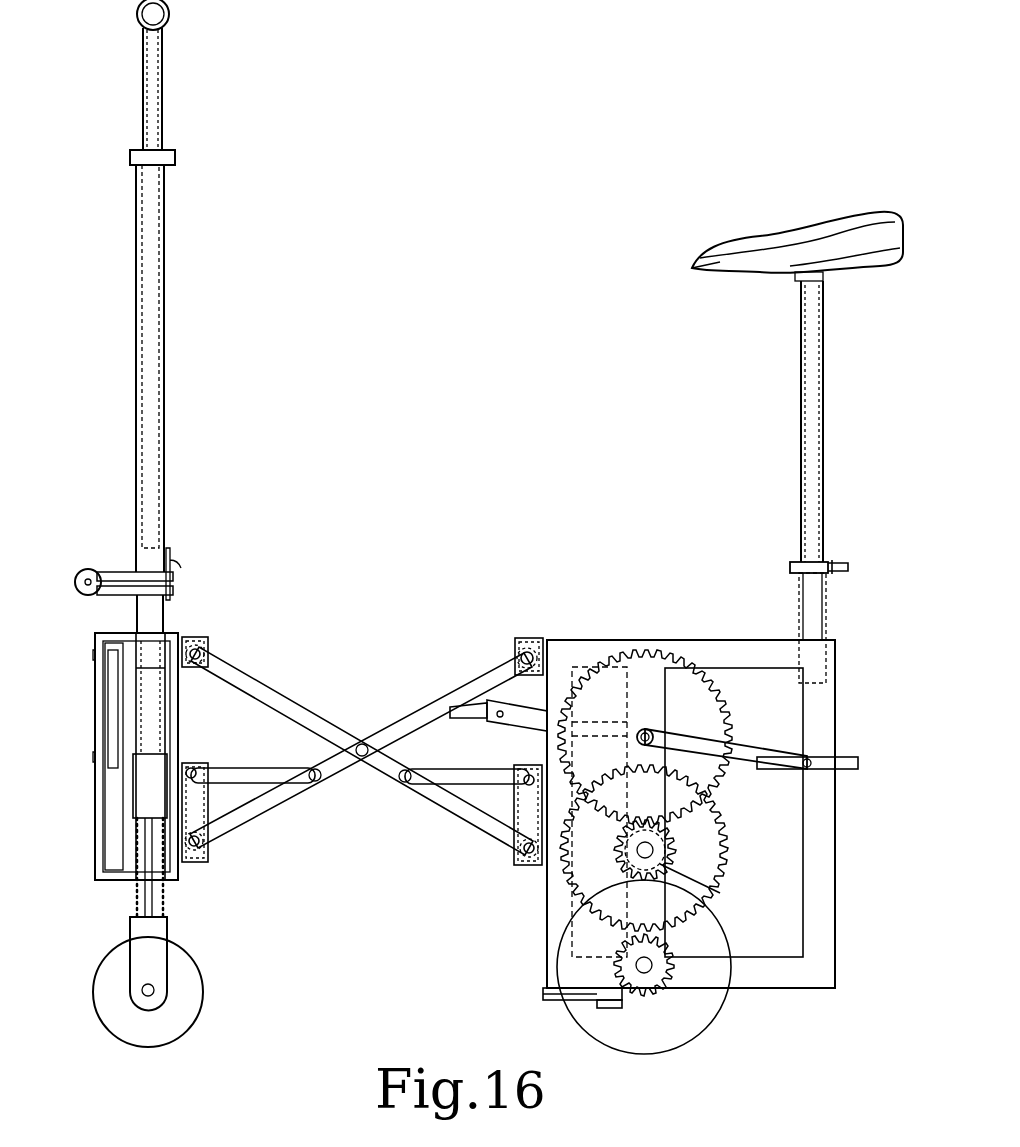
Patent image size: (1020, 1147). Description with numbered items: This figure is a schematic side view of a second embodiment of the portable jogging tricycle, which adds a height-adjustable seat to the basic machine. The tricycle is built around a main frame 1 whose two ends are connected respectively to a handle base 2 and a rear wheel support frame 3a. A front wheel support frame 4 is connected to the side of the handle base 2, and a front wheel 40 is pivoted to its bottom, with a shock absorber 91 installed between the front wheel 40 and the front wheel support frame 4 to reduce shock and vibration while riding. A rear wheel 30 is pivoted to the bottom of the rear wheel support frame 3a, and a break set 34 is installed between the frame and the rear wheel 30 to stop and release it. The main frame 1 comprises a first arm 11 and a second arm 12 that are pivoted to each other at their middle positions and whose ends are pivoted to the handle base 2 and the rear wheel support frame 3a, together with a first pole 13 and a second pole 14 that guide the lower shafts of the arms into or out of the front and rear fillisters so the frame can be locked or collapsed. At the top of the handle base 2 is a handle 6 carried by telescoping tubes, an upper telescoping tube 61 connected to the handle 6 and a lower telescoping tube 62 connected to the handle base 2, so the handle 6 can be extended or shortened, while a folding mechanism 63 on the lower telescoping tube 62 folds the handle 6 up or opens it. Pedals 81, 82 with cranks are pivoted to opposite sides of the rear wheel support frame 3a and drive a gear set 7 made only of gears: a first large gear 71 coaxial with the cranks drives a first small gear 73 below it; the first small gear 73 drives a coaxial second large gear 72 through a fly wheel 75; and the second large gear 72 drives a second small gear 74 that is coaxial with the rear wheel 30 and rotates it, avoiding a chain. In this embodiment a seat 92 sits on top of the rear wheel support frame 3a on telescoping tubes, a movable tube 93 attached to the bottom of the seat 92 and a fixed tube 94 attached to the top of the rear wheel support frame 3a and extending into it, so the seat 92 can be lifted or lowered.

The main frame 1 is at (318, 696).
The handle base 2 is at (167, 730).
The rear wheel support frame 3a is at (598, 638).
The front wheel support frame 4 is at (100, 682).
The handle 6 is at (150, 16).
The gear set 7 is at (680, 792).
The first arm 11 is at (332, 728).
The second arm 12 is at (400, 733).
The first pole 13 is at (250, 775).
The second pole 14 is at (475, 783).
The rear wheel 30 is at (683, 1020).
The break set 34 is at (585, 997).
The front wheel 40 is at (118, 968).
The upper telescoping tube 61 is at (158, 112).
The lower telescoping tube 62 is at (163, 420).
The folding mechanism 63 is at (118, 572).
The first large gear 71 is at (715, 676).
The second large gear 72 is at (728, 876).
The first small gear 73 is at (675, 850).
The second small gear 74 is at (683, 968).
The fly wheel 75 is at (668, 870).
The pedal 81 is at (847, 758).
The pedal 82 is at (476, 712).
The shock absorber 91 is at (146, 782).
The seat 92 is at (760, 240).
The movable tube 93 is at (812, 420).
The fixed tube 94 is at (828, 620).